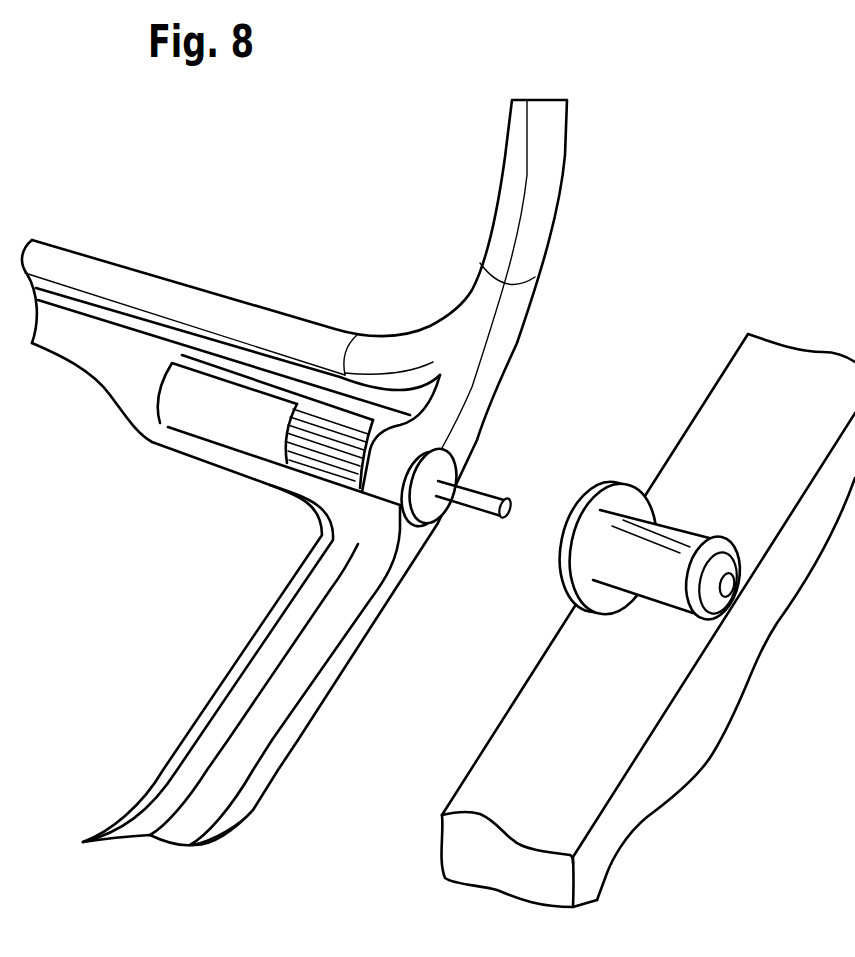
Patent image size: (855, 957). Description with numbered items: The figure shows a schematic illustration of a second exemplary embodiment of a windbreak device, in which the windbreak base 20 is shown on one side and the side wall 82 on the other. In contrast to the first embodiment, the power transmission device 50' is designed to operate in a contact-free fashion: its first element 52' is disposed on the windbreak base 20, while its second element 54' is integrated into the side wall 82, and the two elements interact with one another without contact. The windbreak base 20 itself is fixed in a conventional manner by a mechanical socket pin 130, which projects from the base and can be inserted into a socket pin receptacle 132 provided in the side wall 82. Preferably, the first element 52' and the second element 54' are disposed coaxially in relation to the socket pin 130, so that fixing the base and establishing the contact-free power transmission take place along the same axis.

The windbreak base 20 is at (320, 652).
The power transmission device 50' is at (573, 452).
The first element 52' is at (470, 458).
The mechanical socket pin 130 is at (500, 496).
The second element 54' is at (608, 511).
The socket pin receptacle 132 is at (696, 538).
The side wall 82 is at (580, 793).